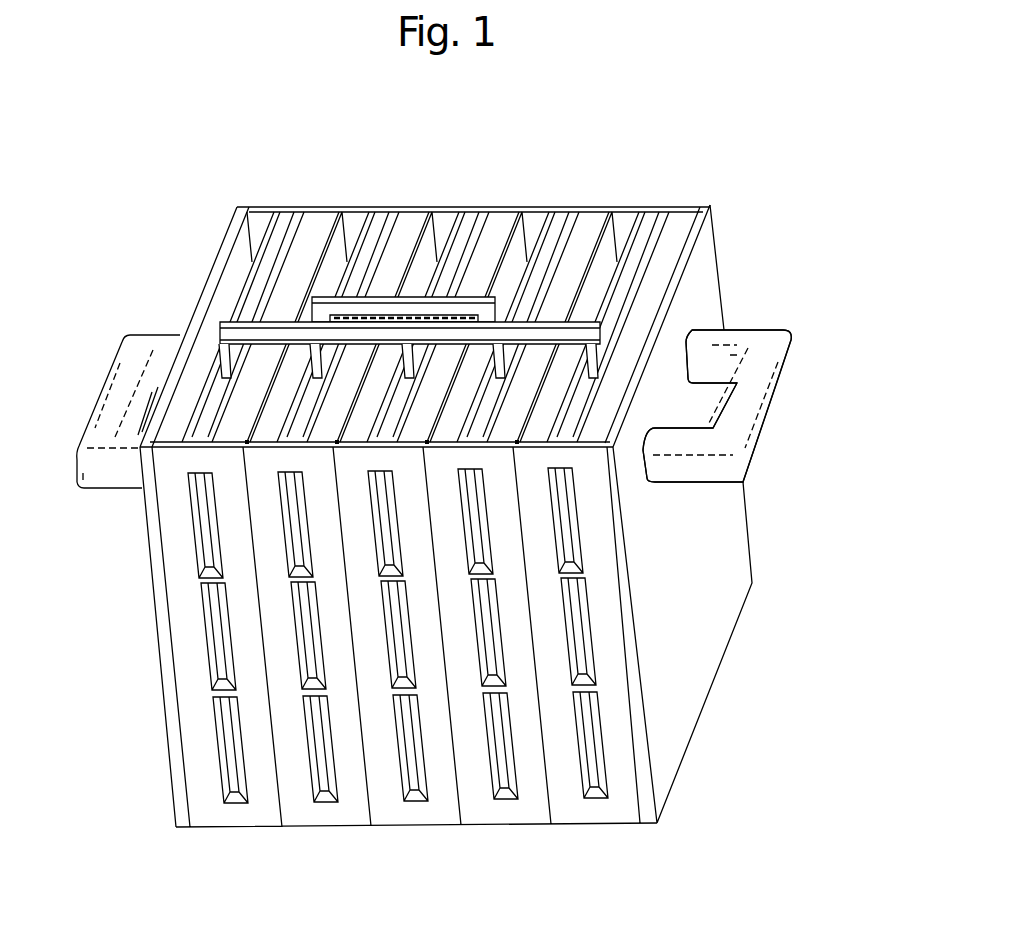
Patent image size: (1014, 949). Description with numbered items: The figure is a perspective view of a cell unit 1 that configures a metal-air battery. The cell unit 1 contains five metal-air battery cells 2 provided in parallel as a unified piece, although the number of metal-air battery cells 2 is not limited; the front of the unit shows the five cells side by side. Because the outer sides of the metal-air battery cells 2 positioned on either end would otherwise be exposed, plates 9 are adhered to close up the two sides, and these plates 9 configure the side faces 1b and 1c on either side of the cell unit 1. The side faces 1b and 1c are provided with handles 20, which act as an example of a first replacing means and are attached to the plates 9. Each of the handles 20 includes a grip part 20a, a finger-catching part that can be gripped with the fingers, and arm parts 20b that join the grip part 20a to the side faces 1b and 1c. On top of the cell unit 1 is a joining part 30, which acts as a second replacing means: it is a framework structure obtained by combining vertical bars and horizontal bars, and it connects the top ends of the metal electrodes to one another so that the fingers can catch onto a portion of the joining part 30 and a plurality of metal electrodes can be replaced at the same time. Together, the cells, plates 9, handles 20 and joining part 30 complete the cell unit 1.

The cell unit 1 is at (493, 149).
The side face 1b is at (210, 273).
The side face 1c is at (708, 260).
The metal-air battery cell 2 is at (235, 813).
The plate 9 is at (148, 573).
The handle 20 is at (107, 395).
The grip part 20a is at (755, 377).
The arm part 20b is at (733, 335).
The joining part 30 is at (420, 272).